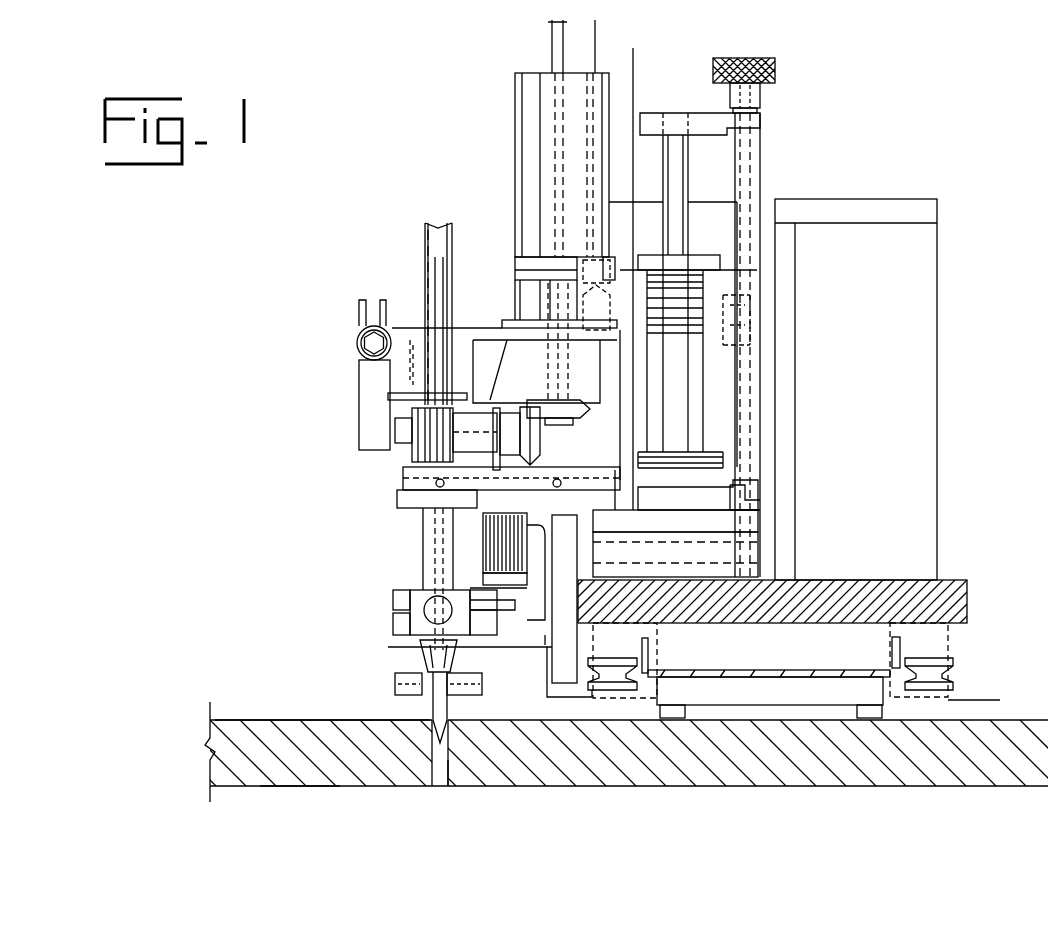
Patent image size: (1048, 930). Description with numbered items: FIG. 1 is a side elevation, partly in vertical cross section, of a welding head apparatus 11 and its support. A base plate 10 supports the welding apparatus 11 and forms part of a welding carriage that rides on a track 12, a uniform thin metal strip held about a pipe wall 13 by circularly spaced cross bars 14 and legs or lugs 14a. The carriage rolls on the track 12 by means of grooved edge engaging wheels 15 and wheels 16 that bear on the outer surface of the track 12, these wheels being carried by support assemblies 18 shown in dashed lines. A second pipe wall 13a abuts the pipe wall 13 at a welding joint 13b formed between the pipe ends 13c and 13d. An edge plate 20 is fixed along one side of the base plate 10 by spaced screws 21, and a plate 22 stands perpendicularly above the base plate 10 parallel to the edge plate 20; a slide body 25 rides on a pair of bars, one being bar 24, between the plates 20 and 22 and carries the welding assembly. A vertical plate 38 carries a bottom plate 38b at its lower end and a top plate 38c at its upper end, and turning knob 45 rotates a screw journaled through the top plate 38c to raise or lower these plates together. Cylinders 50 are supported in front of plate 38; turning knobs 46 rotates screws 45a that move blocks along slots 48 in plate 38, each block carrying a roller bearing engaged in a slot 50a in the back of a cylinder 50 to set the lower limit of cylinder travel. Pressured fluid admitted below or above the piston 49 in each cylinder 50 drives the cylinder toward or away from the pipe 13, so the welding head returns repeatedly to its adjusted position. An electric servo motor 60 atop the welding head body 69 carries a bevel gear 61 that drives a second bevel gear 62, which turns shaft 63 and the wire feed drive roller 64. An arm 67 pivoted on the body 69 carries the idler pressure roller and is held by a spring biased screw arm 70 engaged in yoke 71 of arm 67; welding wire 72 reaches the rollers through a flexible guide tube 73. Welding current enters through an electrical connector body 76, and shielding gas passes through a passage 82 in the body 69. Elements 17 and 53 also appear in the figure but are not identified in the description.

The base plate 10 is at (968, 605).
The welding head apparatus 11 is at (443, 180).
The track 12 is at (783, 690).
The pipe wall 13 is at (1003, 718).
The second pipe wall 13a is at (268, 720).
The welding joint 13b is at (430, 770).
The pipe end 13c is at (462, 786).
The pipe end 13d is at (325, 786).
The cross bars 14 is at (820, 690).
The legs or lugs 14a is at (860, 708).
The edge engaging wheels 15 is at (645, 658).
The wheels 16 is at (650, 648).
The gap 17 is at (974, 699).
The support assemblies 18 is at (660, 663).
The edge plate 20 is at (560, 672).
The screws 21 is at (558, 625).
The plate 22 is at (796, 448).
The bar 24 is at (763, 540).
The slide body 25 is at (745, 530).
The vertical plate 38 is at (762, 427).
The bottom plate 38b is at (750, 500).
The top plate 38c is at (662, 113).
The knob 45 is at (762, 150).
The screws 45a is at (752, 318).
The knobs 46 is at (777, 70).
The slots 48 is at (700, 185).
The piston 49 is at (690, 340).
The cylinders 50 is at (738, 405).
The slot 50a is at (755, 290).
The tool 53 is at (430, 708).
The electric servo motor 60 is at (515, 130).
The bevel gear 61 is at (631, 421).
The second bevel gear 62 is at (522, 445).
The shaft 63 is at (403, 505).
The wire feed drive roller 64 is at (400, 462).
The arm 67 is at (359, 384).
The welding head body 69 is at (481, 340).
The screw arm 70 is at (357, 347).
The yoke 71 is at (359, 312).
The welding wire 72 is at (436, 283).
The welding wire guide tube 73 is at (425, 262).
The electrical connector body 76 is at (483, 565).
The passage 82 is at (620, 492).